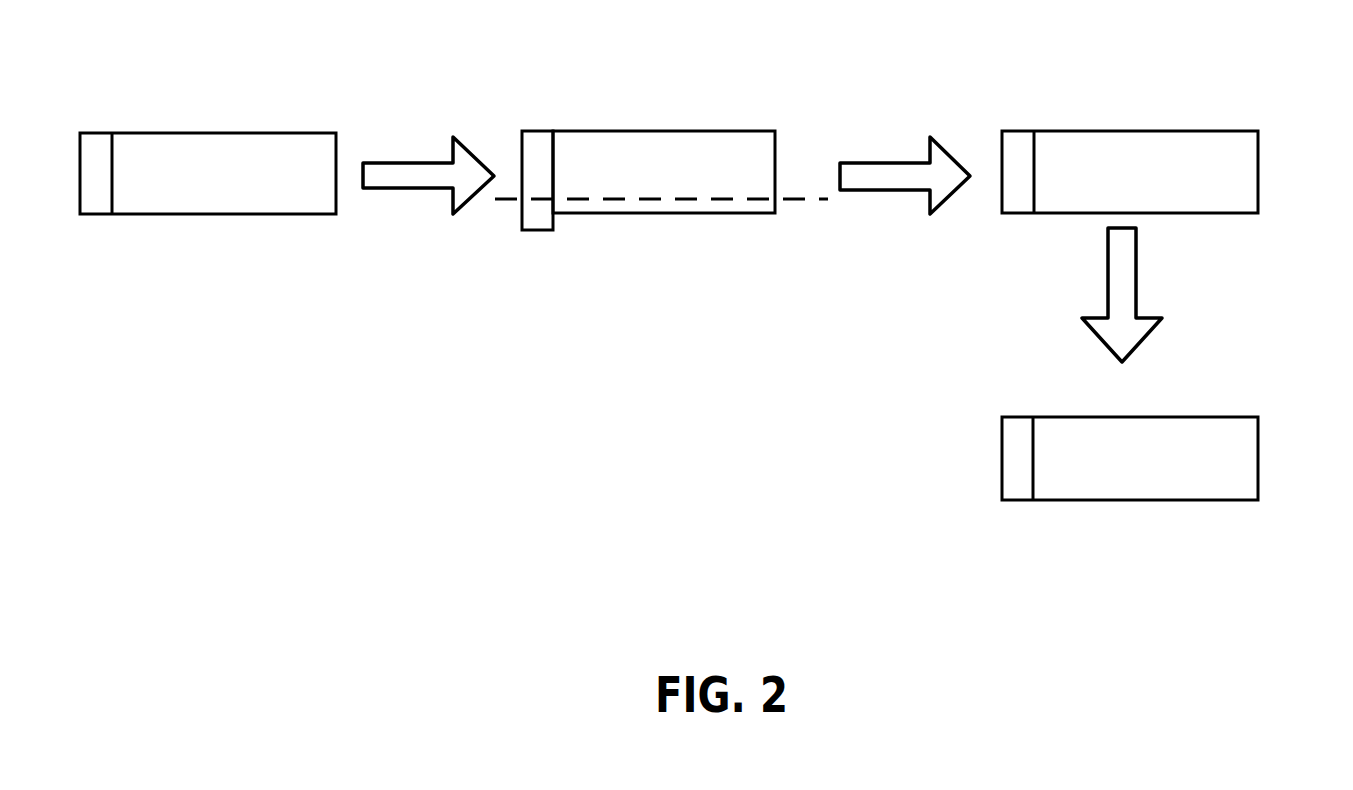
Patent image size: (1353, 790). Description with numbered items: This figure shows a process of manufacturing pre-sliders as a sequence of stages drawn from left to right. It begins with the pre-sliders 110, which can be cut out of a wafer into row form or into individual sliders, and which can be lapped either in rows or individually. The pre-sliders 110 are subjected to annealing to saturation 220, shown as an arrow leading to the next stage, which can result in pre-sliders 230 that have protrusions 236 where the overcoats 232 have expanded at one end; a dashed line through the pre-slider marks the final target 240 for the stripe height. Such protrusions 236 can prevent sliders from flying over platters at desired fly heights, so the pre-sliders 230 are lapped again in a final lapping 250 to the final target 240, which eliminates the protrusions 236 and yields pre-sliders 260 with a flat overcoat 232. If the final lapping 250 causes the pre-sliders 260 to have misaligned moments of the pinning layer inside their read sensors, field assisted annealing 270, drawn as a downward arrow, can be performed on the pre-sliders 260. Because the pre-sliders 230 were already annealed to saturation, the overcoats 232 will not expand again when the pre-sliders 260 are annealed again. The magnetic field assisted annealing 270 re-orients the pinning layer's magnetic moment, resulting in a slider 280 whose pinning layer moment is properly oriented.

The pre-sliders 110 is at (190, 133).
The annealing to saturation 220 is at (411, 139).
The pre-sliders 230 is at (661, 131).
The overcoats 232 is at (530, 131).
The protrusions 236 is at (548, 233).
The final target 240 is at (805, 203).
The final lapping 250 is at (905, 139).
The pre-sliders 260 is at (1155, 131).
The field assisted annealing 270 is at (1212, 295).
The slider 280 is at (1151, 417).